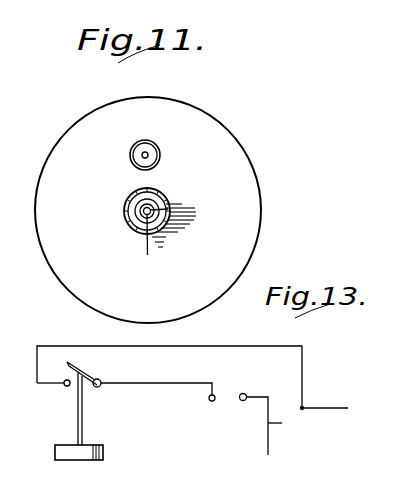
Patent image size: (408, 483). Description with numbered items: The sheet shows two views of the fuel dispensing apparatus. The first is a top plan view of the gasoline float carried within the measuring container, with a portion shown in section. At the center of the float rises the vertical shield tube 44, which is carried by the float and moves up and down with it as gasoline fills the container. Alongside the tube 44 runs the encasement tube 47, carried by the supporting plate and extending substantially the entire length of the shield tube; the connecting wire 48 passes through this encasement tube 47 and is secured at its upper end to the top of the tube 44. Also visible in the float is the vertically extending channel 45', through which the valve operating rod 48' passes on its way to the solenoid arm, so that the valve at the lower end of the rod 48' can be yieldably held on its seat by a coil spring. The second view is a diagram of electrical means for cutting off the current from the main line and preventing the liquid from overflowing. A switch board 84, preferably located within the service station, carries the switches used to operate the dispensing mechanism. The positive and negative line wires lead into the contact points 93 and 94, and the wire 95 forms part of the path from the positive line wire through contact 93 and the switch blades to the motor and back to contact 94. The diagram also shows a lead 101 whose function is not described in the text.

In FIG. 11, the roller 44 is at (132, 226).
In FIG. 11, the pin 45' is at (180, 155).
In FIG. 11, the knurled disc 47 is at (167, 208).
In FIG. 11, the shaft 48 is at (153, 250).
In FIG. 11, the stud 48' is at (105, 184).
In FIG. 13, the battery 84 is at (103, 452).
In FIG. 13, the contact 93 is at (209, 401).
In FIG. 13, the contact 94 is at (262, 375).
In FIG. 13, the conductor 95 is at (217, 343).
In FIG. 13, the conductor 101 is at (283, 426).